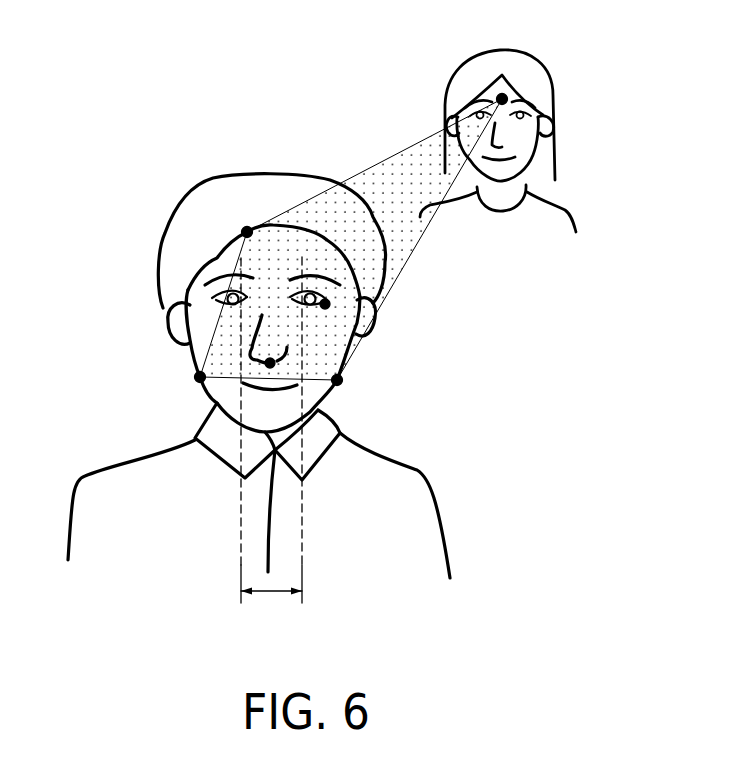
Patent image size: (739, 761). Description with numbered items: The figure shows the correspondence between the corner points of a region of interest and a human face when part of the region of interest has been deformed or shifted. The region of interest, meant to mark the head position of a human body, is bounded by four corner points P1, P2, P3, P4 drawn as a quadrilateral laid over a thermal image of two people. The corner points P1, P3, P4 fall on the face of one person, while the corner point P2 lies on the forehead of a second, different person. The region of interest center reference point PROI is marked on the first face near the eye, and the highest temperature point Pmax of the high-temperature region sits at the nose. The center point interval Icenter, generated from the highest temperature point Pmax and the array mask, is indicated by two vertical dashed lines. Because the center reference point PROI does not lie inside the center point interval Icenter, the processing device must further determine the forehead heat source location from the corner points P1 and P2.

The corner point P1 is at (242, 226).
The corner point P2 is at (498, 93).
The corner point P3 is at (195, 377).
The corner point P4 is at (343, 381).
The region of interest center reference point PROI is at (329, 302).
The highest temperature point Pmax is at (275, 363).
The center point interval Icenter is at (263, 450).